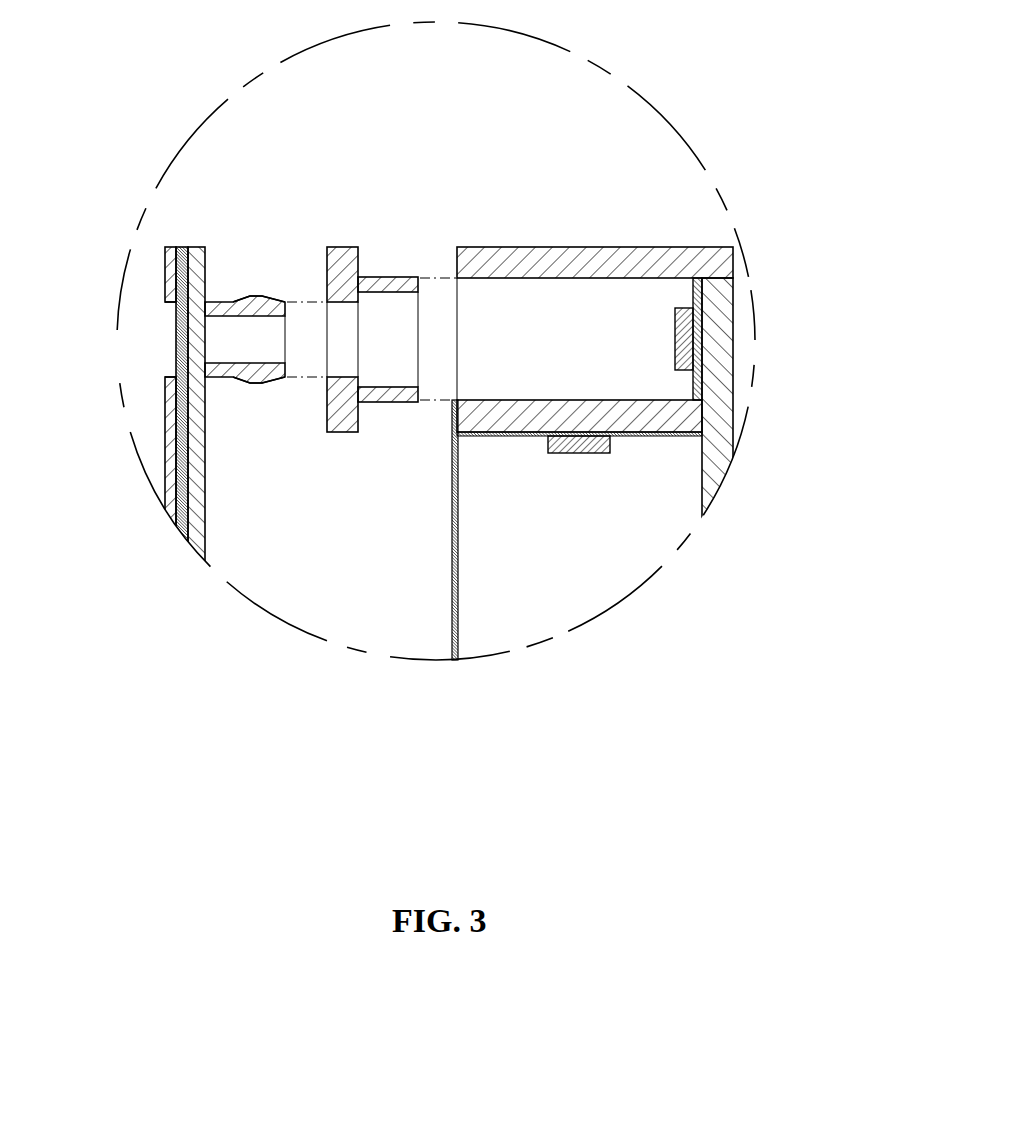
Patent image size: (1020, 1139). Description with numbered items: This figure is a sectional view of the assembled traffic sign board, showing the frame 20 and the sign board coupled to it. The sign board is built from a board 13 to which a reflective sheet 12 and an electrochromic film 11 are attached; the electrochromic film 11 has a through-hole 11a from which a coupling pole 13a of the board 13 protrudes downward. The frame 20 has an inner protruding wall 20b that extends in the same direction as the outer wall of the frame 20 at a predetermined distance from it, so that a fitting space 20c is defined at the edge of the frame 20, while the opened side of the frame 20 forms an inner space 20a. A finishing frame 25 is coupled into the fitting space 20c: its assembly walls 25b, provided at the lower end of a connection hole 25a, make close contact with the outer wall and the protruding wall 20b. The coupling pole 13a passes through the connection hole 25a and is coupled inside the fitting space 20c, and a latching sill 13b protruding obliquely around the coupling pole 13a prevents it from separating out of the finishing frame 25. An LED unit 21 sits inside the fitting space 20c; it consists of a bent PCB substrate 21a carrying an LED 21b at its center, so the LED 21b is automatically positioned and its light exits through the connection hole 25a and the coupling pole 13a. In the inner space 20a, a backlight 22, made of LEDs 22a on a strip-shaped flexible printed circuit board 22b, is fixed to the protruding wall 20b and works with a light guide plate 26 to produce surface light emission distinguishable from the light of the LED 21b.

The electrochromic film 11 is at (123, 422).
The through-hole 11a is at (171, 338).
The reflective sheet 12 is at (178, 315).
The board 13 is at (244, 240).
The coupling pole 13a is at (220, 301).
The latching sill 13b is at (255, 296).
The frame 20 is at (673, 382).
The inner space 20a is at (513, 573).
The protruding wall 20b is at (628, 418).
The fitting space 20c is at (585, 340).
The LED unit 21 is at (782, 339).
The PCB substrate 21a is at (692, 345).
The LED 21b is at (697, 330).
The backlight 22 is at (637, 512).
The LEDs 22a is at (592, 453).
The flexible printed circuit board 22b is at (687, 437).
The finishing frame 25 is at (308, 362).
The connection hole 25a is at (343, 327).
The assembly walls 25b is at (388, 277).
The light guide plate 26 is at (452, 627).